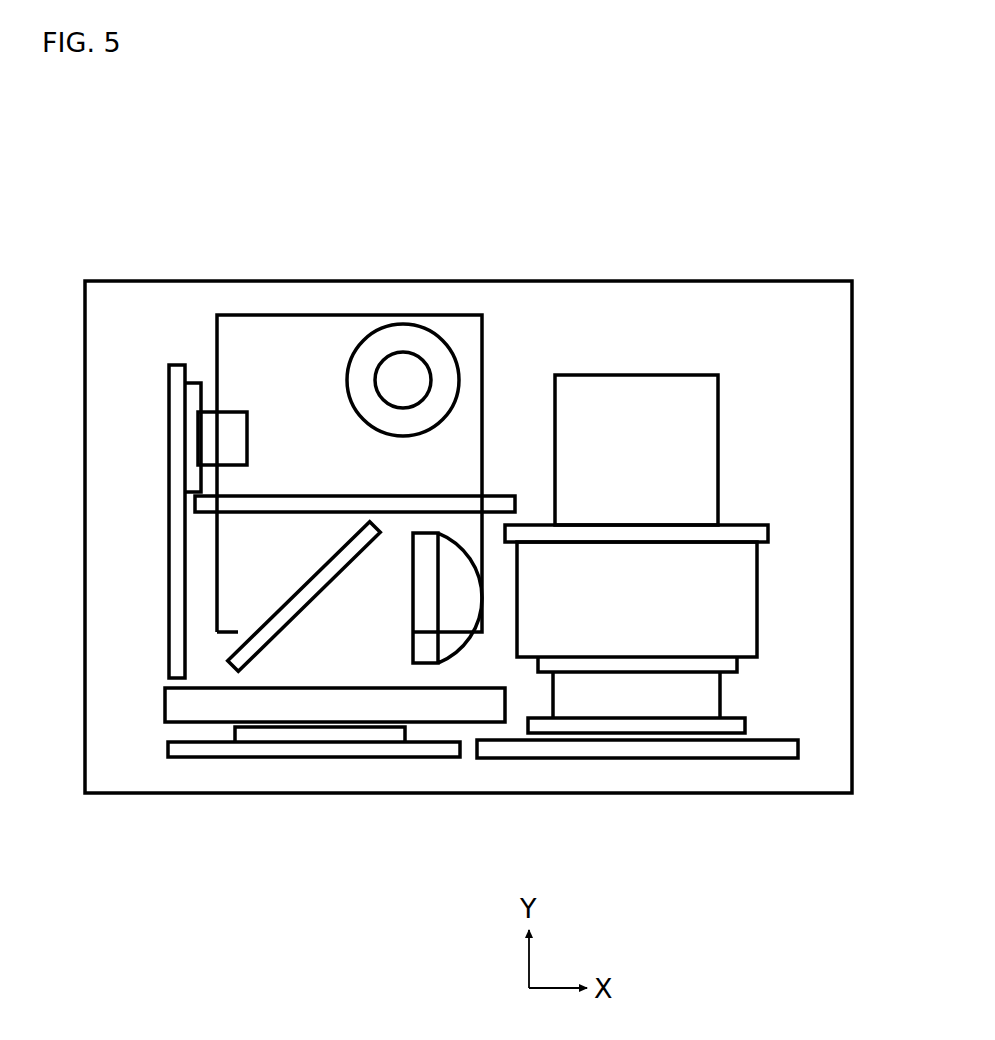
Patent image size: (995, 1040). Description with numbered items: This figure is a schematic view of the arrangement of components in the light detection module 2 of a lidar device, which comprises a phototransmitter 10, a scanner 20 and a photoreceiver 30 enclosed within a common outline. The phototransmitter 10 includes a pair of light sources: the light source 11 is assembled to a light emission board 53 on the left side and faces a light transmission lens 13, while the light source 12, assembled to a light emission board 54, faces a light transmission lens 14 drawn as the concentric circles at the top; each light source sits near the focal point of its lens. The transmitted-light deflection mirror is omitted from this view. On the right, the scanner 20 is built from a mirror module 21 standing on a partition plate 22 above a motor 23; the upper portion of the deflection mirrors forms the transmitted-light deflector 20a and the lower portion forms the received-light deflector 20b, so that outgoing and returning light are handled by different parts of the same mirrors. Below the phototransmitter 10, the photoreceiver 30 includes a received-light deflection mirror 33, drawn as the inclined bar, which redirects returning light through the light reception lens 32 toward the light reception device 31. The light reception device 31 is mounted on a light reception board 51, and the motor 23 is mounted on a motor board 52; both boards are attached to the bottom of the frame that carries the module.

The light detection module 2 is at (731, 134).
The phototransmitter 10 is at (340, 203).
The light source 11 is at (192, 434).
The light source 12 is at (410, 345).
The light transmission lens 13 is at (246, 432).
The light transmission lens 14 is at (410, 382).
The scanner 20 is at (646, 247).
The transmitted-light deflector 20a is at (675, 468).
The received-light deflector 20b is at (715, 615).
The mirror module 21 is at (677, 413).
The partition plate 22 is at (735, 525).
The motor 23 is at (655, 702).
The photoreceiver 30 is at (350, 871).
The light reception device 31 is at (307, 735).
The light reception lens 32 is at (458, 628).
The received-light deflection mirror 33 is at (267, 630).
The light reception board 51 is at (193, 762).
The motor board 52 is at (725, 760).
The light emission board 53 is at (173, 540).
The light emission board 54 is at (262, 347).